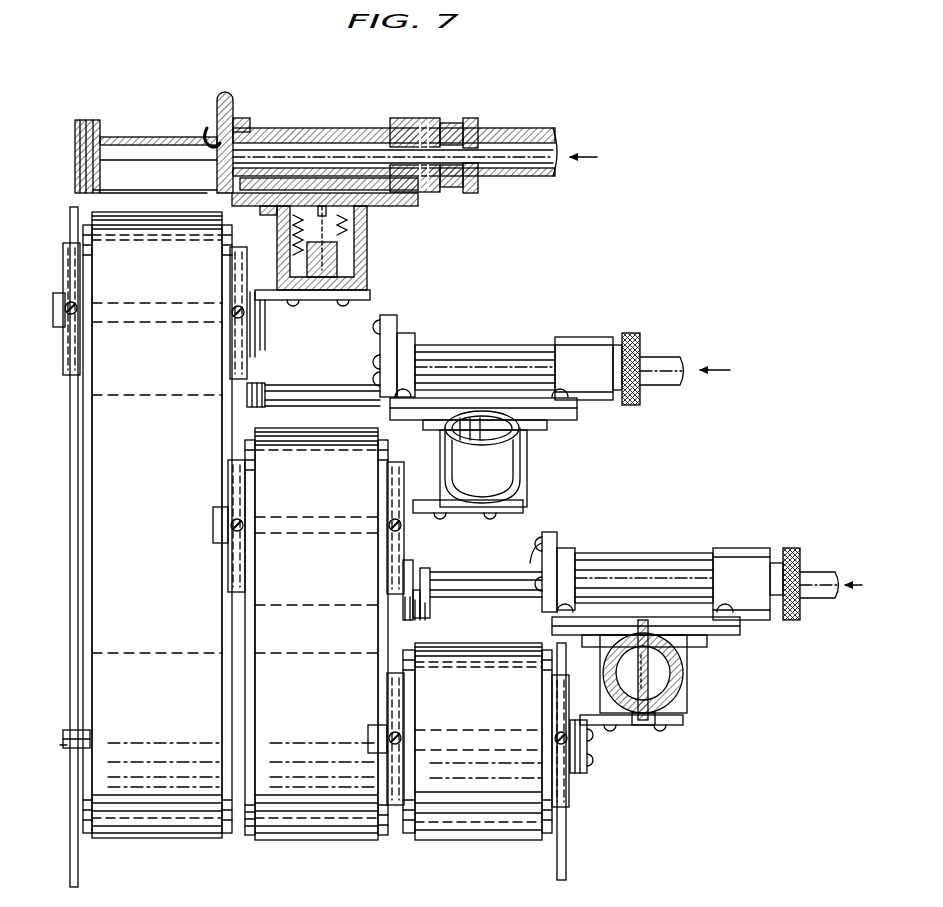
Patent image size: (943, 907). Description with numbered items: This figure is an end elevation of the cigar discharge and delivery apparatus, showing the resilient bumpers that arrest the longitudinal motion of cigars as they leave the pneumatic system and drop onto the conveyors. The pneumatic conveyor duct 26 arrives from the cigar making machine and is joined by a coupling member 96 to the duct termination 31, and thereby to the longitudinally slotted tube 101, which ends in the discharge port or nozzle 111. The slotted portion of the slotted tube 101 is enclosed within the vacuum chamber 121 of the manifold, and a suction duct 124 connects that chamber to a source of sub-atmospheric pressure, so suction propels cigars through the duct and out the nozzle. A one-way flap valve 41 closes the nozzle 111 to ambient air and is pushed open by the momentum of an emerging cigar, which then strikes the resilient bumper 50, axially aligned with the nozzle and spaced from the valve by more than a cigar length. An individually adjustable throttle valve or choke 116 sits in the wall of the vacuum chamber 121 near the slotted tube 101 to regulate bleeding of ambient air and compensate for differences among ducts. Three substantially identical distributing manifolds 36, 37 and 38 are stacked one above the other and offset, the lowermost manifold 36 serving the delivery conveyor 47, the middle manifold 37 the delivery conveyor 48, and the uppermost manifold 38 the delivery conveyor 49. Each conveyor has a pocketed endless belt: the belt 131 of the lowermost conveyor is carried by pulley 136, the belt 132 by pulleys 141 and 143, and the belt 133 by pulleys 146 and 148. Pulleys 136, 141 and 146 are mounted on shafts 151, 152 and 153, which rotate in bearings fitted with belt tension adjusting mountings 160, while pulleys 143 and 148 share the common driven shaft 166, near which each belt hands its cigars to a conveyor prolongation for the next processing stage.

The pneumatic conveyor duct 26 is at (539, 170).
The duct termination 31 is at (412, 119).
The distributing manifold 36 is at (698, 680).
The distributing manifold 37 is at (551, 417).
The distributing manifold 38 is at (337, 249).
The one-way flap valve 41 is at (217, 128).
The delivery conveyor 47 is at (423, 633).
The delivery conveyor 48 is at (268, 418).
The delivery conveyor 49 is at (90, 211).
The resilient bumper 50 is at (97, 160).
The coupling member 96 is at (478, 123).
The longitudinally slotted tube 101 is at (353, 142).
The discharge port or nozzle 111 is at (203, 136).
The throttle valve or choke 116 is at (278, 231).
The vacuum chamber 121 is at (342, 265).
The suction duct 124 is at (518, 474).
The endless belt 131 is at (518, 843).
The endless belt 132 is at (340, 842).
The endless belt 133 is at (96, 563).
The pulley 136 is at (406, 832).
The pulley 141 is at (247, 603).
The pulley 143 is at (247, 833).
The pulley 146 is at (85, 405).
The pulley 148 is at (223, 833).
The shaft 151 is at (431, 727).
The shaft 152 is at (280, 548).
The shaft 153 is at (118, 333).
The belt tension adjusting mounting 160 is at (68, 312).
The shaft 166 is at (66, 742).